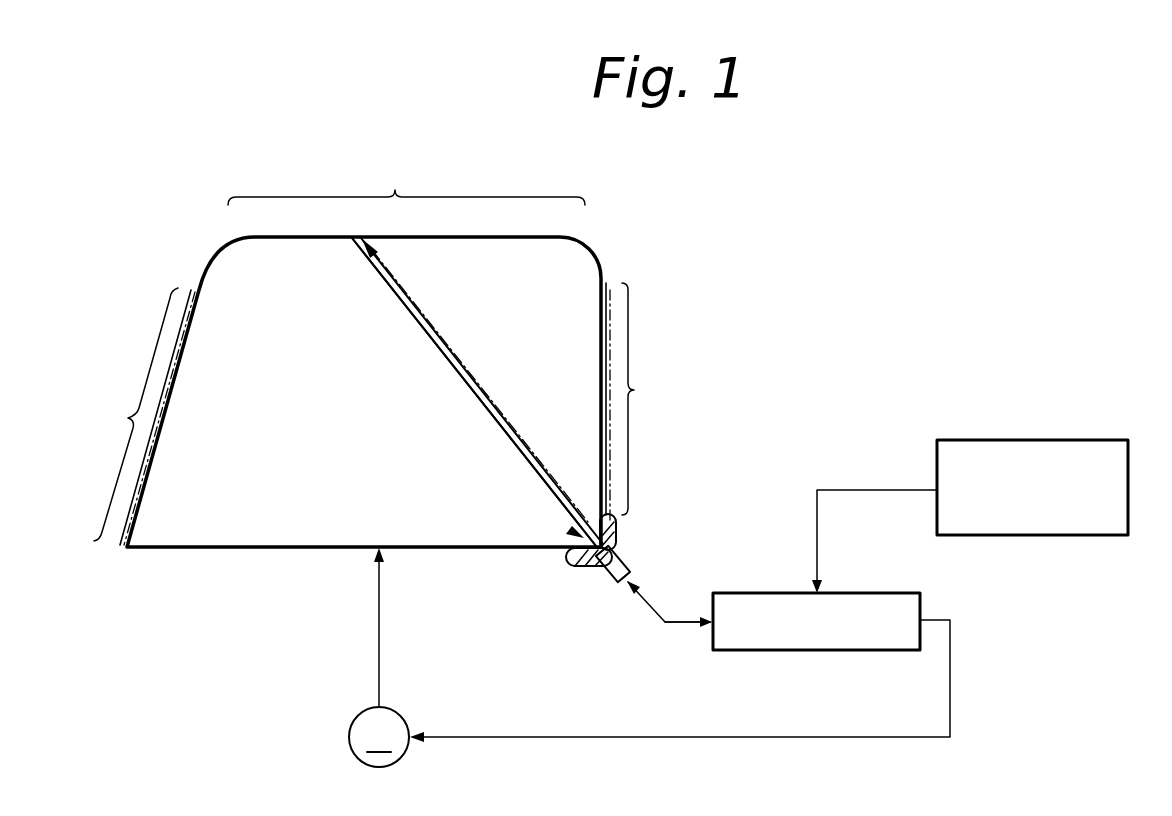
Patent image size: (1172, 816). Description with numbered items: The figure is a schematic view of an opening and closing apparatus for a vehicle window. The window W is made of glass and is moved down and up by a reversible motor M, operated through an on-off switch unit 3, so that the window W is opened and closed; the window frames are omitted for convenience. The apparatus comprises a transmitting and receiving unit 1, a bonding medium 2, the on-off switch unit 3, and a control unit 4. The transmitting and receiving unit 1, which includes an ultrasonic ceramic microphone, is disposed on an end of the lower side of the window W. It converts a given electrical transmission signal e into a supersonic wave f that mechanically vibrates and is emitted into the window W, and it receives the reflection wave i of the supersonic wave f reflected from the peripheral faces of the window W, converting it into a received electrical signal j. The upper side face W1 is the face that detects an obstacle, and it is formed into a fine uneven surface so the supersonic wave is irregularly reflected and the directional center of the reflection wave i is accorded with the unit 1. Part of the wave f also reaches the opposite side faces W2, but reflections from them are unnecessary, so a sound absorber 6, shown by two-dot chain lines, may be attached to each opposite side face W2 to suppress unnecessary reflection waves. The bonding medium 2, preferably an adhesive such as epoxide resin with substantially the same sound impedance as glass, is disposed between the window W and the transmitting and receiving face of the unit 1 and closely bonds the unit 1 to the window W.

The transmitting and receiving unit 1 is at (626, 558).
The bonding medium 2 is at (618, 524).
The on-off switch unit 3 is at (1063, 440).
The control unit 4 is at (757, 592).
The sound absorber 6 is at (193, 292).
The window W is at (601, 250).
The upper side face W1 is at (406, 181).
The opposite side faces W2 is at (369, 412).
The supersonic wave f is at (455, 346).
The reflection wave i is at (432, 346).
The electrical transmission signal e is at (669, 604).
The received electrical signal j is at (687, 641).
The reversible motor M is at (379, 737).